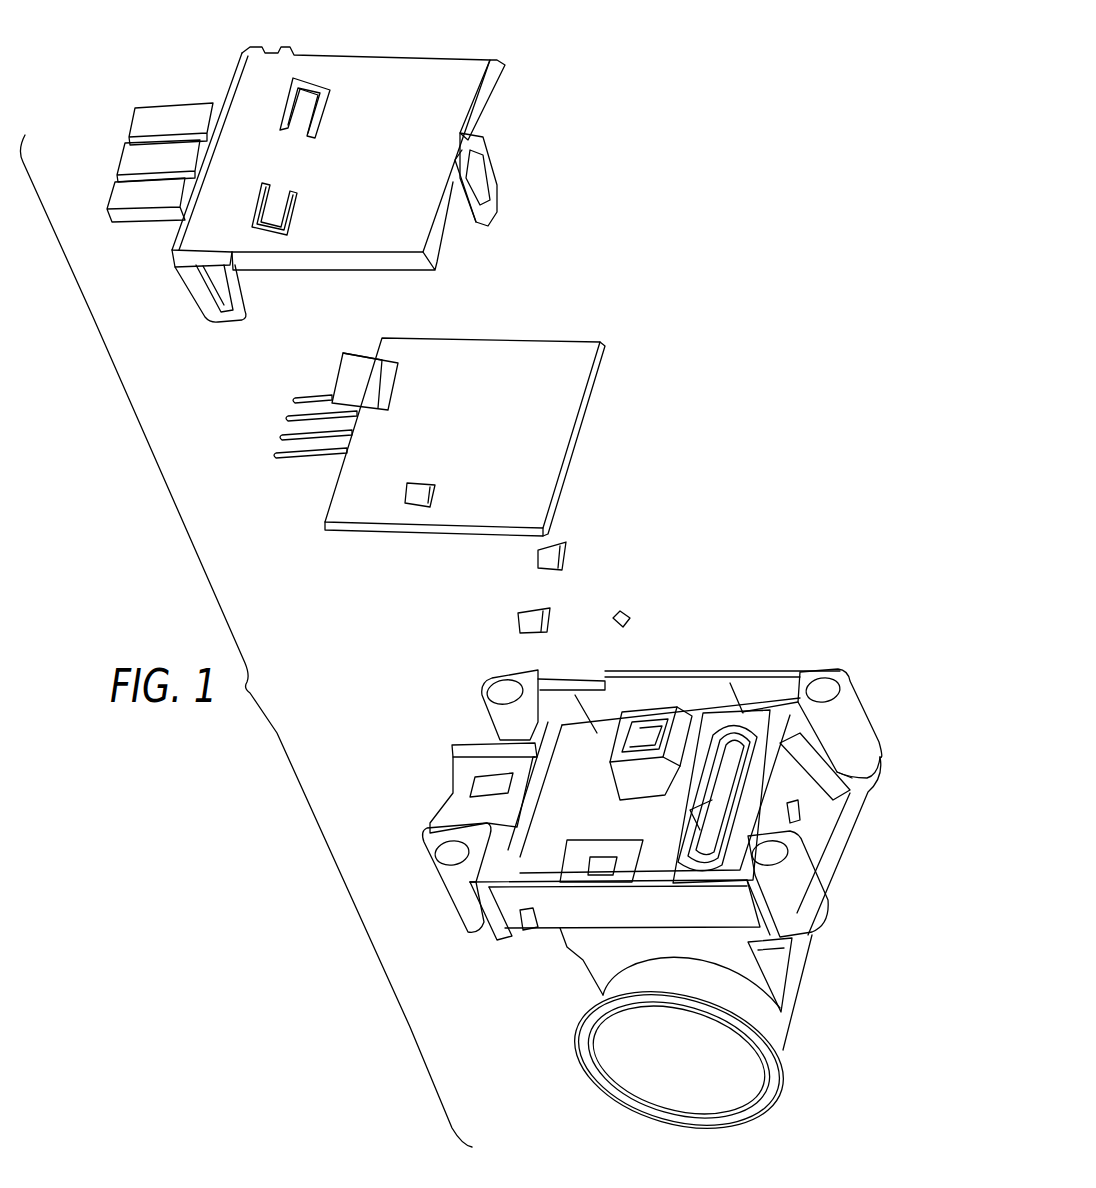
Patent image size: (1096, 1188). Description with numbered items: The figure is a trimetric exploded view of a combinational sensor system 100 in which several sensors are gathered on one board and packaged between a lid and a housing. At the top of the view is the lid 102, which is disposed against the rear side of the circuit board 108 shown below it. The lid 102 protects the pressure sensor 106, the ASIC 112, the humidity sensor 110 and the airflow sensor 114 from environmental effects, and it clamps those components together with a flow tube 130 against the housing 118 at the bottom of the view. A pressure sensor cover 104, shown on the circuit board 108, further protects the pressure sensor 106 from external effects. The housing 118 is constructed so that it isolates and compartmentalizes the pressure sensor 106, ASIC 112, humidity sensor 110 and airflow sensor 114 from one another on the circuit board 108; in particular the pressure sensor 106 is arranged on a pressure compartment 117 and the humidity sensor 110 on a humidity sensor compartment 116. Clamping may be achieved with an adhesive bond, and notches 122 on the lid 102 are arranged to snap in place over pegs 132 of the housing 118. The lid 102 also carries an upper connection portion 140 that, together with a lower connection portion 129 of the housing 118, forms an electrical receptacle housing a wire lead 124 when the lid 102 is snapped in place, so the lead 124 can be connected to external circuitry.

The combinational sensor system 100 is at (705, 113).
The lid 102 is at (255, 92).
The pressure sensor cover 104 is at (358, 378).
The pressure sensor 106 is at (413, 486).
The circuit board 108 is at (500, 502).
The humidity sensor 110 is at (570, 549).
The ASIC 112 is at (533, 617).
The airflow sensor 114 is at (622, 612).
The humidity sensor compartment 116 is at (648, 740).
The pressure compartment 117 is at (597, 858).
The housing 118 is at (452, 902).
The notches 122 is at (483, 161).
The wire lead 124 is at (293, 403).
The lower connection portion 129 is at (453, 773).
The flow tube 130 is at (725, 767).
The pegs 132 is at (807, 818).
The upper connection portion 140 is at (155, 120).